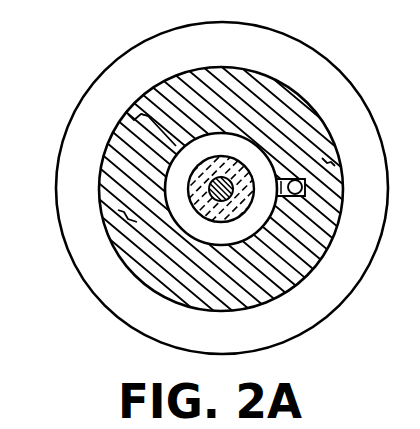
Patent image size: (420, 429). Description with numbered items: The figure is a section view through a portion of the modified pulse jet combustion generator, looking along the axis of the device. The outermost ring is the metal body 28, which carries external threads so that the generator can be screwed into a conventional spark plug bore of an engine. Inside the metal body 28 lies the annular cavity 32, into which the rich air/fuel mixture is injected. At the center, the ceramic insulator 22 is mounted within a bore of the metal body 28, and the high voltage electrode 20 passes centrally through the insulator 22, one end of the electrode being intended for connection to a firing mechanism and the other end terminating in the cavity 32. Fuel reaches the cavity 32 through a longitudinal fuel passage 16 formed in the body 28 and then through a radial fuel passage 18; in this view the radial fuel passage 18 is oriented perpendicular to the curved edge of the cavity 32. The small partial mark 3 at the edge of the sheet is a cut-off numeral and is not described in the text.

The metal body 28 is at (222, 188).
The cavity 32 is at (214, 195).
The ring 3 is at (292, 189).
The ceramic insulator 22 is at (188, 195).
The radial fuel passage 18 is at (292, 206).
The longitudinal fuel passage 16 is at (302, 183).
The high voltage electrode 20 is at (128, 114).